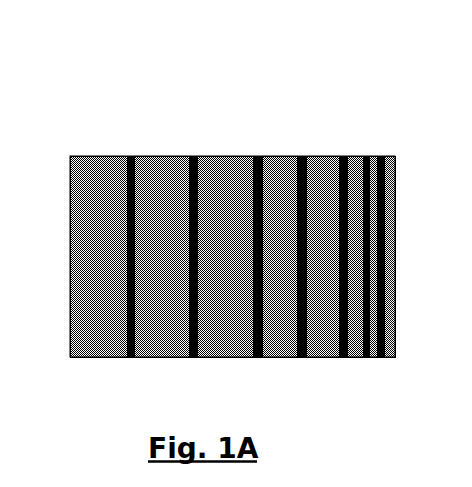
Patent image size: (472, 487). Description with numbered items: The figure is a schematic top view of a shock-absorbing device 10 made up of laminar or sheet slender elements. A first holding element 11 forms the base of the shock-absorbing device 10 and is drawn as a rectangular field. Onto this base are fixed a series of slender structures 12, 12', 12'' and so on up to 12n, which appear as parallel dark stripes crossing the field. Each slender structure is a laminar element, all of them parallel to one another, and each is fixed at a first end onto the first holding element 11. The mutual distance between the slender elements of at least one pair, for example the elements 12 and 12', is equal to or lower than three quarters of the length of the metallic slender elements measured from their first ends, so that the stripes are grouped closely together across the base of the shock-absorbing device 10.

The shock-absorbing device 10 is at (226, 120).
The first holding element 11 is at (98, 172).
The slender structure 12 is at (306, 234).
The slender structure 12' is at (387, 214).
The slender structure 12'' is at (359, 275).
The slender structure 12n is at (130, 357).